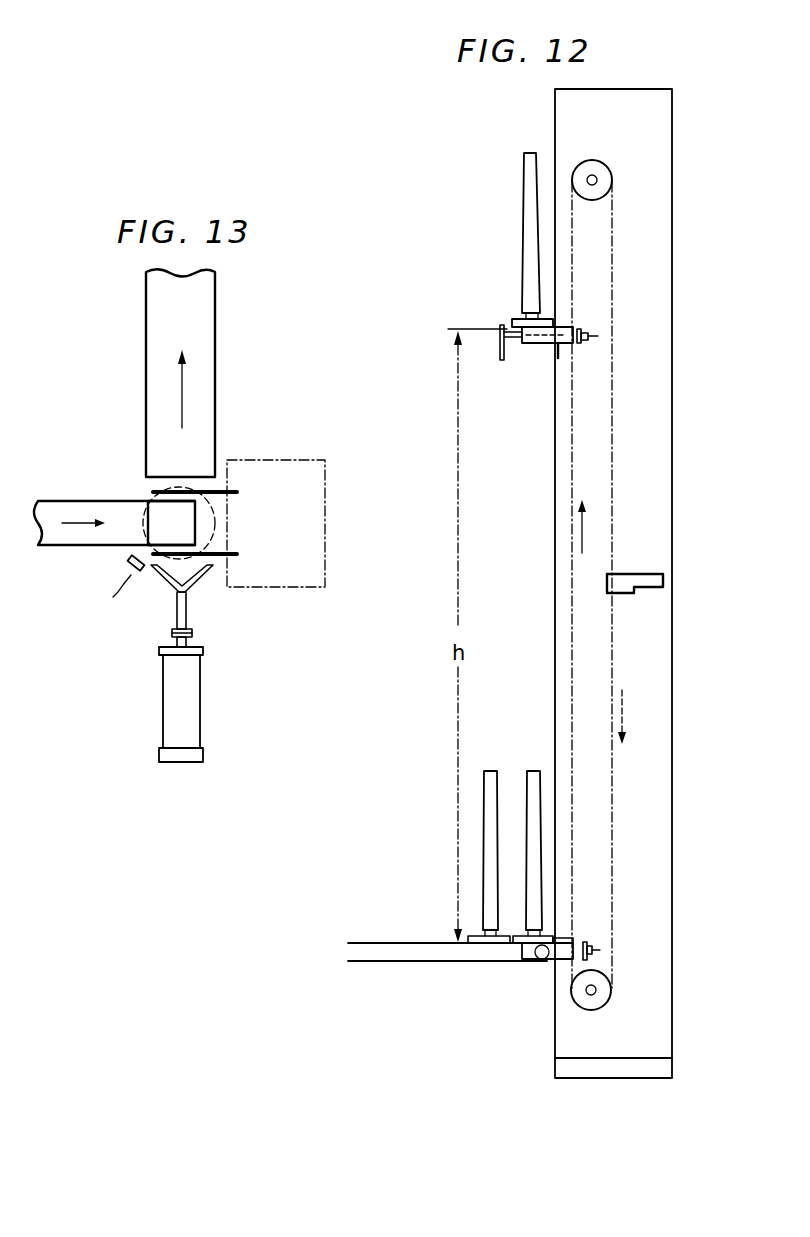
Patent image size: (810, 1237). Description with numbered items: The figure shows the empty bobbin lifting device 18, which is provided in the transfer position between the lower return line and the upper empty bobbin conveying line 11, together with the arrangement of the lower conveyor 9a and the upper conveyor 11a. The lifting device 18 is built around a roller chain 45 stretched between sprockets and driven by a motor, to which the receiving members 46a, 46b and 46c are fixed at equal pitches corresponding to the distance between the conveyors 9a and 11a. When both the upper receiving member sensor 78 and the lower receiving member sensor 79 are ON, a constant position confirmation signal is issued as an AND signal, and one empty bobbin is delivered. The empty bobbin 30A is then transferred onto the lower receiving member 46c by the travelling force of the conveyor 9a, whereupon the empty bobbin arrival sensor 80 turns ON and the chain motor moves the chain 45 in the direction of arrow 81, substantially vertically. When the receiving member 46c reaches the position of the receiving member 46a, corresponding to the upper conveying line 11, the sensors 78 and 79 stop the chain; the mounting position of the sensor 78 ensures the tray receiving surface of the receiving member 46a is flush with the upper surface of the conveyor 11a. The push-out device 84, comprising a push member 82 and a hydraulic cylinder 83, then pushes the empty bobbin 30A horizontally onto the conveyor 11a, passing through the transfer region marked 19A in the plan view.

In FIG. 12, the empty bobbin lifting device 18 is at (492, 202).
In FIG. 13, the empty bobbin lifting device 18 is at (281, 444).
In FIG. 12, the empty bobbin 30A is at (527, 248).
In FIG. 12, the upper conveyor 11a is at (512, 323).
In FIG. 13, the upper conveyor 11a is at (208, 322).
In FIG. 12, the upper empty bobbin conveying line 11 is at (516, 348).
In FIG. 12, the receiving member 46a is at (573, 322).
In FIG. 12, the receiving member 46b is at (643, 577).
In FIG. 12, the receiving member 46c is at (560, 941).
In FIG. 12, the upper receiving member sensor 78 is at (588, 331).
In FIG. 12, the lower receiving member sensor 79 is at (588, 948).
In FIG. 12, the roller chain 45 is at (612, 473).
In FIG. 12, the arrow 81 is at (580, 530).
In FIG. 12, the conveyor 9a is at (426, 941).
In FIG. 13, the conveyor 9a is at (60, 500).
In FIG. 13, the empty bobbin arrival sensor 80 is at (127, 568).
In FIG. 13, the push member 82 is at (160, 584).
In FIG. 13, the transfer position 19A is at (215, 558).
In FIG. 13, the hydraulic cylinder 83 is at (192, 727).
In FIG. 13, the push-out device 84 is at (152, 682).